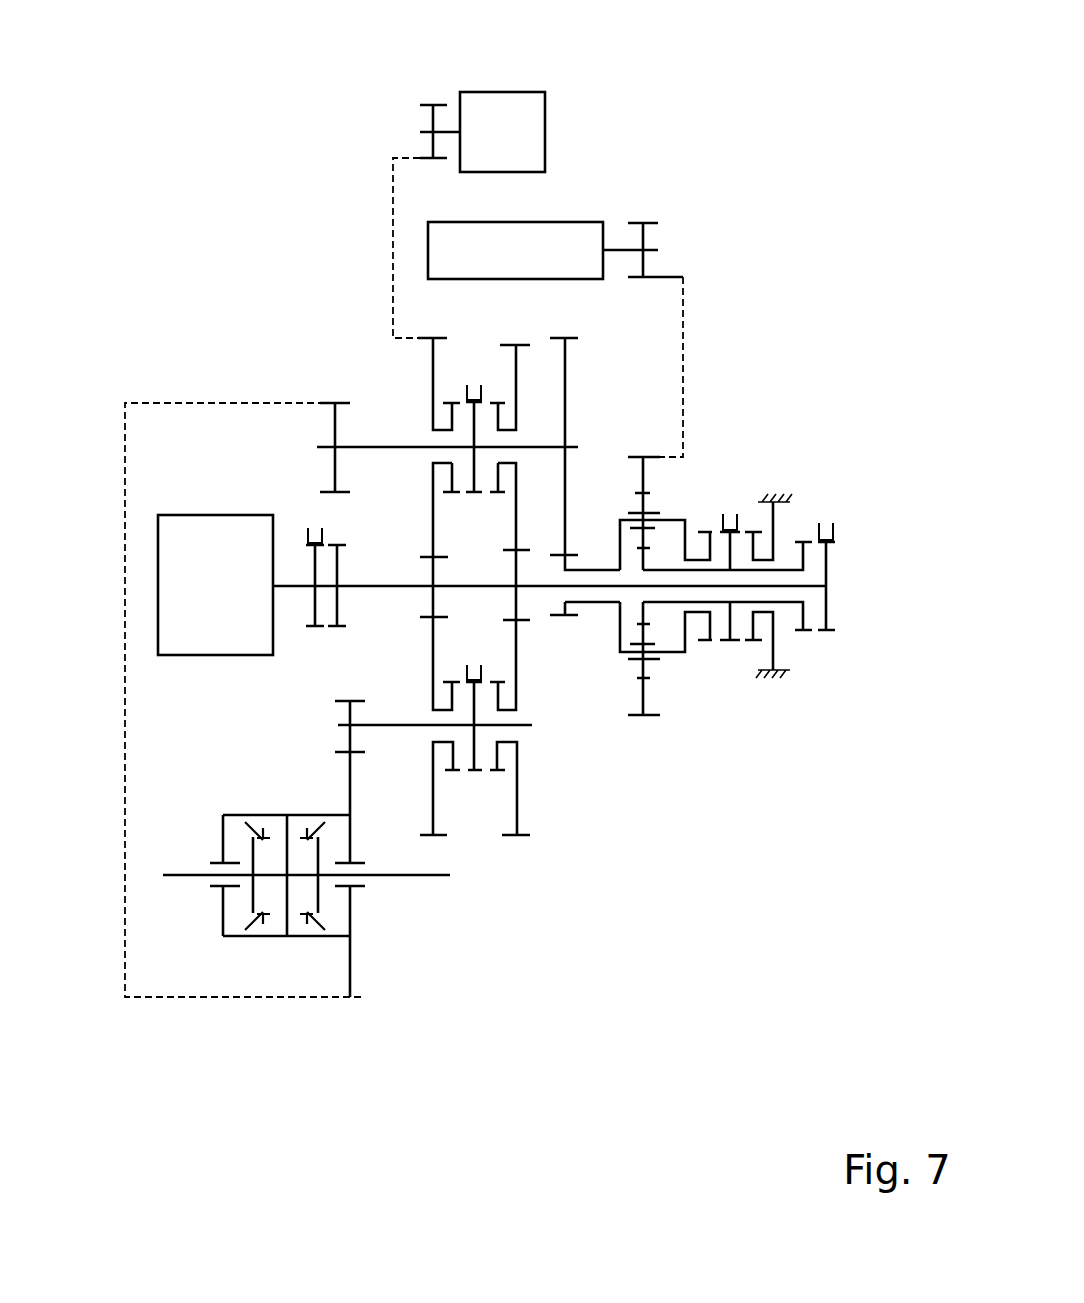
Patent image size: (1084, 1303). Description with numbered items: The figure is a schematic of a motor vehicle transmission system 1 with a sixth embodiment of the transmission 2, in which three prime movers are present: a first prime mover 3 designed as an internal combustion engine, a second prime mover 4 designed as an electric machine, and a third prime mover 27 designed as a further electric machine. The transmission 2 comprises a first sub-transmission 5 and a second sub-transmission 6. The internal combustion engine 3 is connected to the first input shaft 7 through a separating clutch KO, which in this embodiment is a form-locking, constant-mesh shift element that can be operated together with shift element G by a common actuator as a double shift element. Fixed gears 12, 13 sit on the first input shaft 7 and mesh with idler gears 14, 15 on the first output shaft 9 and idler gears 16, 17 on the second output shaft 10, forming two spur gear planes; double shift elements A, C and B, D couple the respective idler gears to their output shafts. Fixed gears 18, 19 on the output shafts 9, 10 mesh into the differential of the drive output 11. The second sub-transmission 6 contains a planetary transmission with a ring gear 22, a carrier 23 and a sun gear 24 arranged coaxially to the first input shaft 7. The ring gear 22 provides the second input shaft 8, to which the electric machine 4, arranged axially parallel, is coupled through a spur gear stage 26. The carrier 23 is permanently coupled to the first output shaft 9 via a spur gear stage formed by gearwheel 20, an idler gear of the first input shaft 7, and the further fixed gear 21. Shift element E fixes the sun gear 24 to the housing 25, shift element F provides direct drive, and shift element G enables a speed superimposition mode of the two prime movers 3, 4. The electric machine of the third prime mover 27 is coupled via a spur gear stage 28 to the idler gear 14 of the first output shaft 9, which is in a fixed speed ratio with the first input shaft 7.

The transmission system 1 is at (745, 127).
The transmission 2 is at (412, 952).
The first prime mover 3 is at (198, 611).
The second prime mover 4 is at (467, 252).
The first sub-transmission 5 is at (580, 892).
The second sub-transmission 6 is at (785, 836).
The first input shaft 7 is at (363, 583).
The second input shaft 8 is at (648, 483).
The first output shaft 9 is at (412, 447).
The second output shaft 10 is at (422, 727).
The drive output 11 is at (242, 1012).
The fixed gear 12 is at (432, 572).
The fixed gear 13 is at (517, 595).
The idler gear 14 is at (432, 413).
The idler gear 15 is at (517, 413).
The idler gear 16 is at (436, 790).
The idler gear 17 is at (517, 755).
The fixed gear 18 is at (333, 468).
The fixed gear 19 is at (350, 712).
The gearwheel 20 is at (567, 605).
The further fixed gear 21 is at (567, 423).
The ring gear 22 is at (644, 658).
The carrier 23 is at (662, 518).
The sun gear 24 is at (692, 570).
The housing 25 is at (778, 673).
The spur gear stage 26 is at (684, 422).
The third prime mover 27 is at (493, 127).
The spur gear stage 28 is at (393, 290).